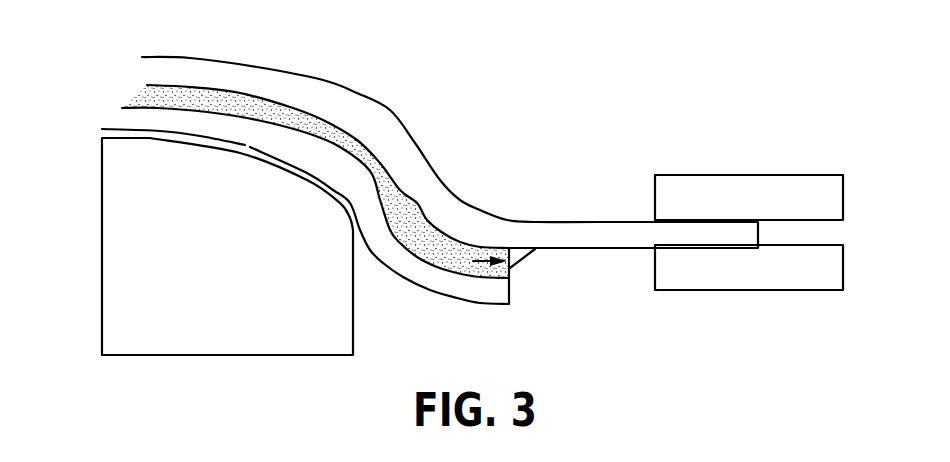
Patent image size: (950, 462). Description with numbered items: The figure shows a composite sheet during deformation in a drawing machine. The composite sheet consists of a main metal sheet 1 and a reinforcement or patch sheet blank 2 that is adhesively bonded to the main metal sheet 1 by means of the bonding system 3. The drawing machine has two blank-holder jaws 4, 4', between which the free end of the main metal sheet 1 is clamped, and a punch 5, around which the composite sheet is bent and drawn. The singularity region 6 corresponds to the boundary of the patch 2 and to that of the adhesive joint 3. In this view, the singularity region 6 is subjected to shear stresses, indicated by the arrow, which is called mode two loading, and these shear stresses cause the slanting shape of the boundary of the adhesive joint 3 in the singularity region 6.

The main metal sheet 1 is at (587, 233).
The patch sheet blank 2 is at (482, 290).
The bonding system 3 is at (373, 163).
The blank-holder jaw 4 is at (749, 159).
The blank-holder jaw 4' is at (749, 194).
The punch 5 is at (127, 277).
The singularity region 6 is at (520, 262).